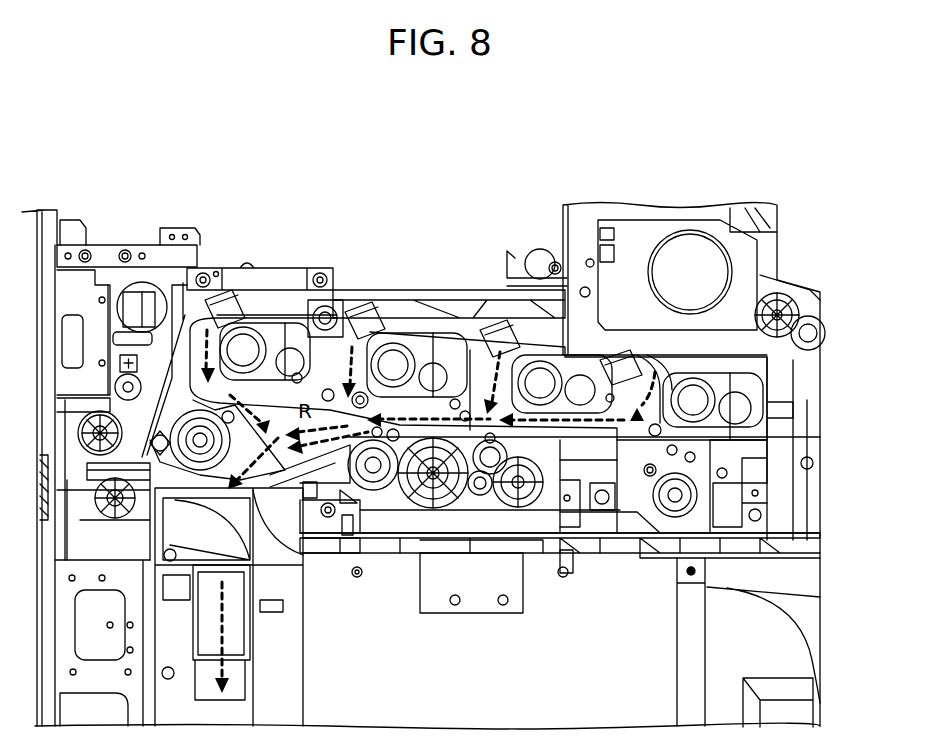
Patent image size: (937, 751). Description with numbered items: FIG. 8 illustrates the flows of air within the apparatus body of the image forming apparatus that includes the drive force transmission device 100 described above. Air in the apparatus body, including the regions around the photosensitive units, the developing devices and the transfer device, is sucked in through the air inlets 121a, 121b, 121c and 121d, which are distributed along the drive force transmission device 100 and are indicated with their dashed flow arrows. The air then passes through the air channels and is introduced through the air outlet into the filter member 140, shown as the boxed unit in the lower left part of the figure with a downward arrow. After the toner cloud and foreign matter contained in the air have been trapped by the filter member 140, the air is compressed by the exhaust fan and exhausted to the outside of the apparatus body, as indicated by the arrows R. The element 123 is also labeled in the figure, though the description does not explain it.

The drive force transmission device 100 is at (445, 290).
The air inlet 121a is at (222, 262).
The air inlet 121b is at (360, 330).
The air inlet 121c is at (487, 330).
The air inlet 121d is at (660, 352).
The shaft 123 is at (358, 578).
The filter member 140 is at (305, 610).